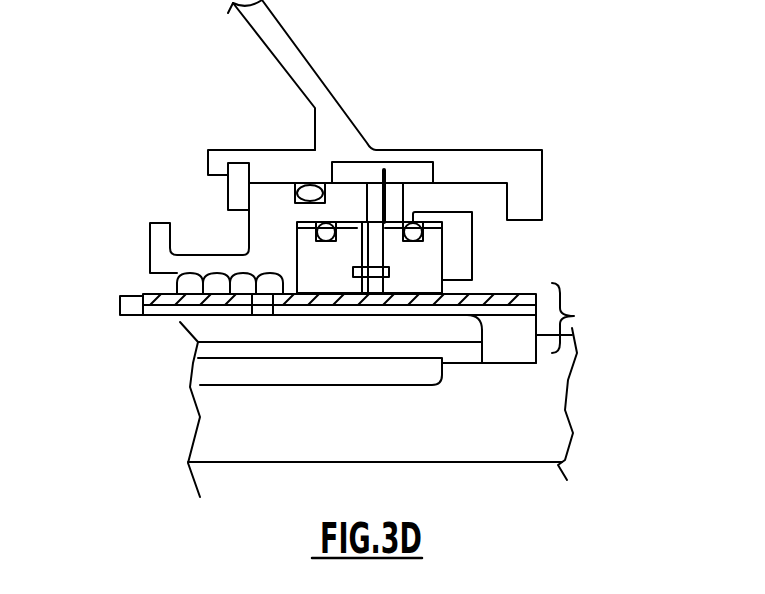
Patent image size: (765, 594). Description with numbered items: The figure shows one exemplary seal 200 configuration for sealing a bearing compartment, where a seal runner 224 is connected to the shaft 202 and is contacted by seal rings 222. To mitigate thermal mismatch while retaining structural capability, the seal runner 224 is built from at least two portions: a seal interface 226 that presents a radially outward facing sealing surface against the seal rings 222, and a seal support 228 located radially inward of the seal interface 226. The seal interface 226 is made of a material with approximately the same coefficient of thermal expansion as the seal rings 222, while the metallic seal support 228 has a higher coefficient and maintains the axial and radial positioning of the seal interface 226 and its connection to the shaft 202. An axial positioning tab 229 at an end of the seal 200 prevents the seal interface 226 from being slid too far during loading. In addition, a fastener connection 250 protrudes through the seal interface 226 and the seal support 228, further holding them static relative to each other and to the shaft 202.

The seal 200 is at (528, 82).
The shaft 202 is at (478, 430).
The seal rings 222 is at (322, 270).
The seal runner 224 is at (575, 316).
The seal interface 226 is at (502, 292).
The seal support 228 is at (518, 353).
The axial positioning tab 229 is at (135, 298).
The fastener connection 250 is at (263, 310).